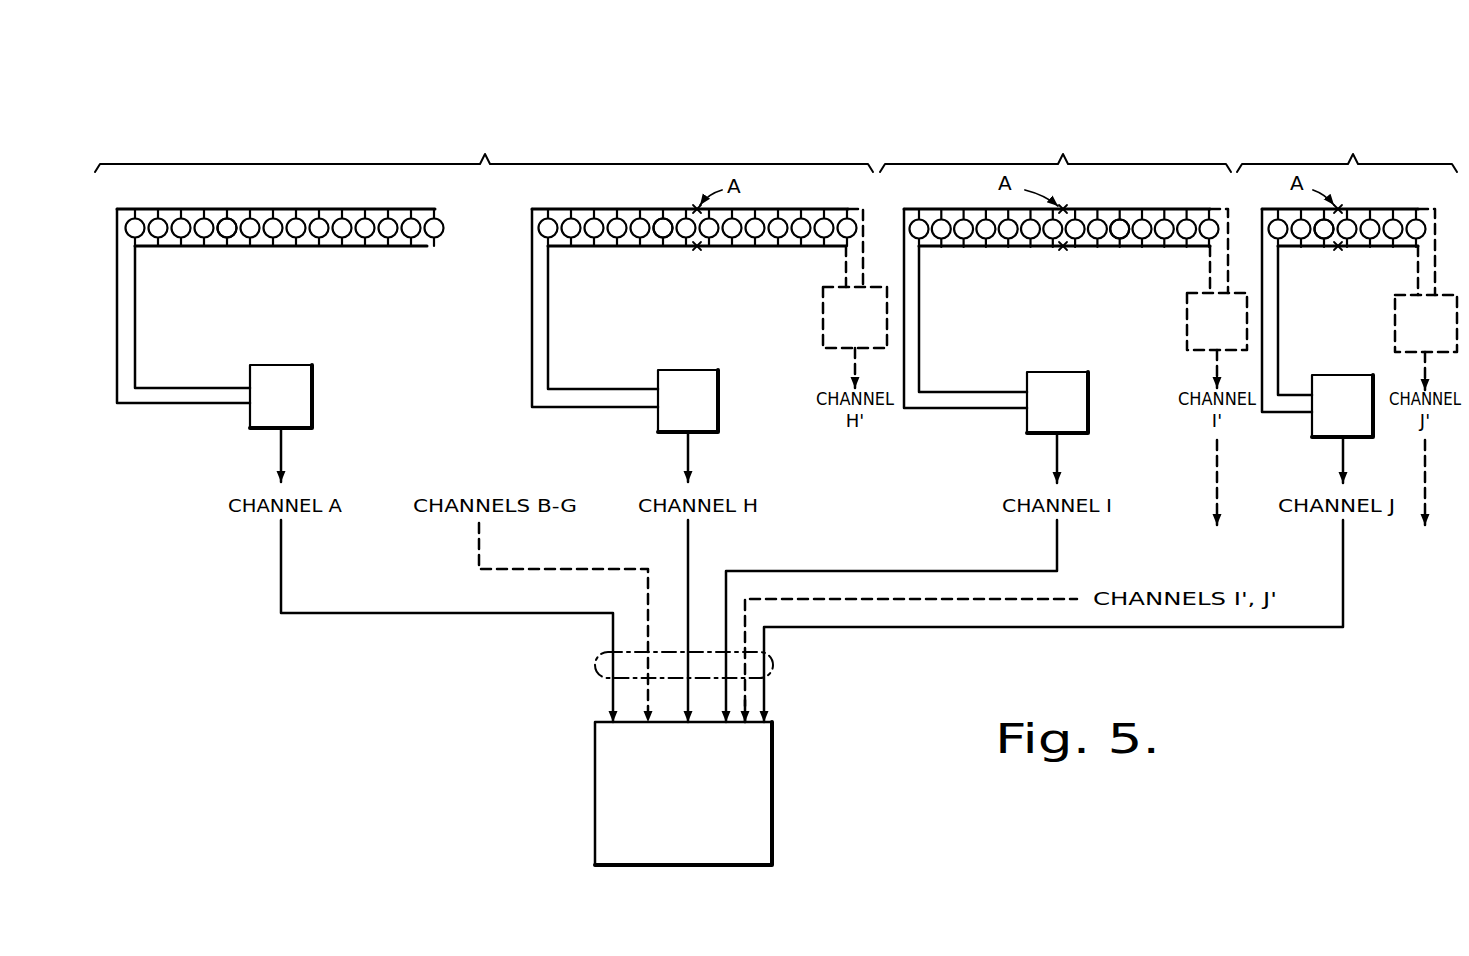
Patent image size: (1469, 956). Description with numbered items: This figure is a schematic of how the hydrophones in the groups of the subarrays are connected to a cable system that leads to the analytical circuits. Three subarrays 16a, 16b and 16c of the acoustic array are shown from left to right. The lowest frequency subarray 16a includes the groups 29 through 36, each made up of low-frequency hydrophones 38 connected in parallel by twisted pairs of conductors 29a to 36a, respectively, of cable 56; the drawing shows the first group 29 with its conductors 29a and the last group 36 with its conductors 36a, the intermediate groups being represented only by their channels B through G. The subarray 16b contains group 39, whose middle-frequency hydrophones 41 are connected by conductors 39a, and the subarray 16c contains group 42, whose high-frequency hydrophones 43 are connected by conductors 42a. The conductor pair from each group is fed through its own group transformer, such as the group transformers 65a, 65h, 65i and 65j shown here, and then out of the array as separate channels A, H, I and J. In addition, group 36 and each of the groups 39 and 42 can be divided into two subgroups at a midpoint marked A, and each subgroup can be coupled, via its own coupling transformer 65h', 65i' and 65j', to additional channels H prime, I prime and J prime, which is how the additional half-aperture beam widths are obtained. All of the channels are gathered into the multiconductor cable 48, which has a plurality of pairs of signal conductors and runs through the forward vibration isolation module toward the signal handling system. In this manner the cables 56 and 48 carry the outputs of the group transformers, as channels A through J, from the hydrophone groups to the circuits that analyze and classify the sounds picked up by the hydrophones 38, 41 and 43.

The subarray 16a is at (484, 123).
The subarray 16b is at (1055, 124).
The subarray 16c is at (1347, 124).
The group 29 is at (287, 172).
The twisted pair of conductors 29a is at (142, 315).
The group 36 is at (666, 198).
The twisted pair of conductors 36a is at (555, 325).
The hydrophone 38 is at (229, 238).
The group 39 is at (1082, 200).
The conductors 39a is at (933, 322).
The hydrophone 41 is at (1117, 239).
The group 42 is at (1370, 203).
The conductors 42a is at (1288, 325).
The hydrophone 43 is at (1322, 239).
The group transformer 65a is at (300, 368).
The group transformer 65h is at (696, 375).
The coupling transformer 65h' is at (822, 298).
The group transformer 65i is at (1057, 380).
The coupling transformer 65i' is at (1178, 367).
The group transformer 65j is at (1335, 386).
The coupling transformer 65j' is at (1394, 367).
The multiconductor cable 48 is at (773, 672).
The cable 56 is at (691, 801).